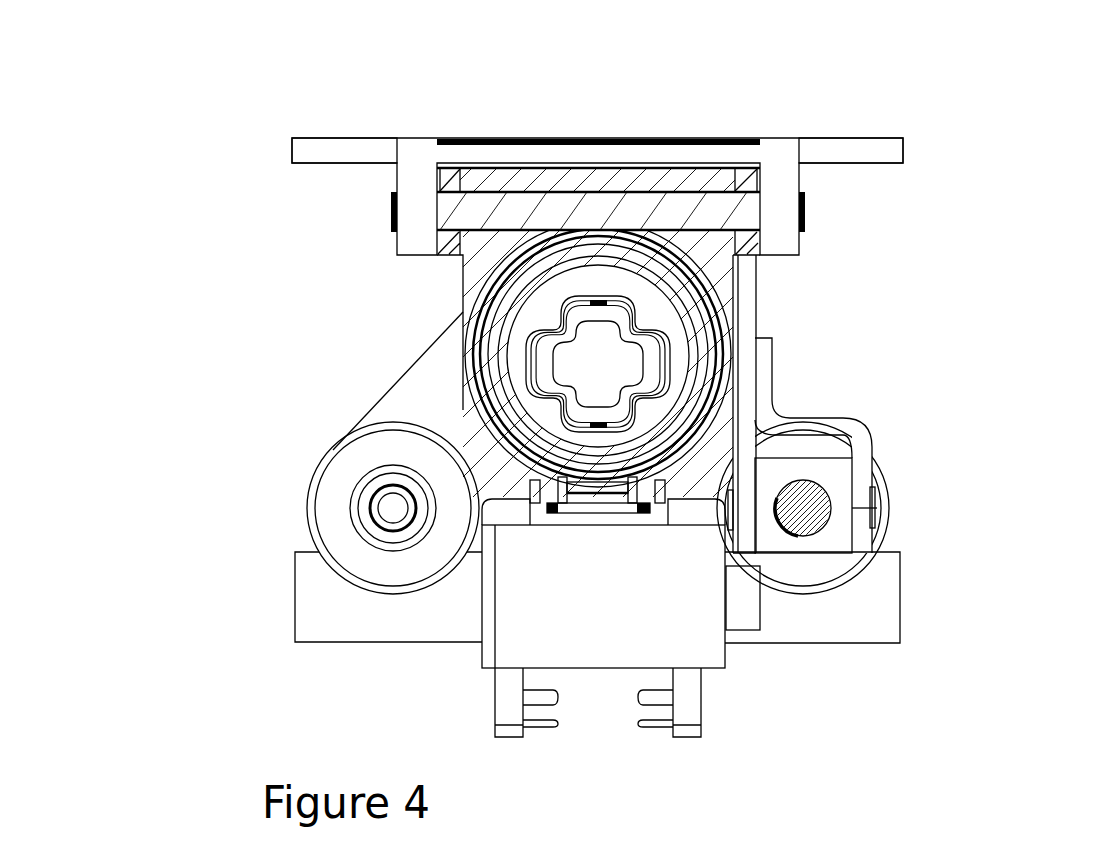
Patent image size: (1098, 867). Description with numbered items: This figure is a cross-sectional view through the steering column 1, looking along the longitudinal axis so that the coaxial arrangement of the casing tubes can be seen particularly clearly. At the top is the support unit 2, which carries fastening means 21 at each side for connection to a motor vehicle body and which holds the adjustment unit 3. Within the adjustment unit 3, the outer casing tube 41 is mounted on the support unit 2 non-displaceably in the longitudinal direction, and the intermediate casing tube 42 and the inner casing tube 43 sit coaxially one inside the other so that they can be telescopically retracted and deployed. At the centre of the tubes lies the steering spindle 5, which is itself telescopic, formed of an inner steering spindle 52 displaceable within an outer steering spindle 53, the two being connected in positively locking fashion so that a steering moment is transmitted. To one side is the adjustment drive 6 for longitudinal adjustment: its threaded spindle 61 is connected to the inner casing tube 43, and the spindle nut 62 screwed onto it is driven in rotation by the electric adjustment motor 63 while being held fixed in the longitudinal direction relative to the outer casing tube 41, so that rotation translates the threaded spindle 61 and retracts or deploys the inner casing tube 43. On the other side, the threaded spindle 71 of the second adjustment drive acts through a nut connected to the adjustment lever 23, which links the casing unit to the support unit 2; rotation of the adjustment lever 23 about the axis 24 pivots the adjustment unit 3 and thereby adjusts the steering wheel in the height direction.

The steering column 1 is at (195, 370).
The support unit 2 is at (780, 128).
The fastening means 21 is at (330, 152).
The axis 24 is at (727, 216).
The adjustment unit 3 is at (457, 282).
The adjustment lever 23 is at (742, 407).
The steering spindle 5 is at (548, 322).
The outer casing tube 41 is at (476, 343).
The intermediate casing tube 42 is at (488, 372).
The inner casing tube 43 is at (500, 408).
The outer steering spindle 53 is at (667, 353).
The inner steering spindle 52 is at (665, 369).
The adjustment drive 6 is at (292, 483).
The threaded spindle 61 is at (392, 510).
The spindle nut 62 is at (355, 545).
The electric adjustment motor 63 is at (363, 627).
The threaded spindle 71 is at (832, 514).